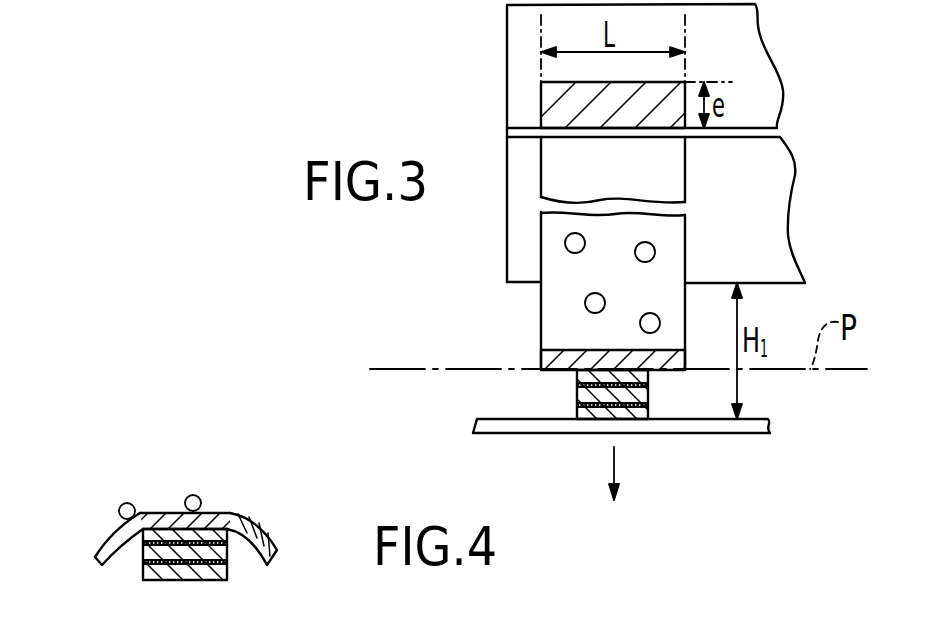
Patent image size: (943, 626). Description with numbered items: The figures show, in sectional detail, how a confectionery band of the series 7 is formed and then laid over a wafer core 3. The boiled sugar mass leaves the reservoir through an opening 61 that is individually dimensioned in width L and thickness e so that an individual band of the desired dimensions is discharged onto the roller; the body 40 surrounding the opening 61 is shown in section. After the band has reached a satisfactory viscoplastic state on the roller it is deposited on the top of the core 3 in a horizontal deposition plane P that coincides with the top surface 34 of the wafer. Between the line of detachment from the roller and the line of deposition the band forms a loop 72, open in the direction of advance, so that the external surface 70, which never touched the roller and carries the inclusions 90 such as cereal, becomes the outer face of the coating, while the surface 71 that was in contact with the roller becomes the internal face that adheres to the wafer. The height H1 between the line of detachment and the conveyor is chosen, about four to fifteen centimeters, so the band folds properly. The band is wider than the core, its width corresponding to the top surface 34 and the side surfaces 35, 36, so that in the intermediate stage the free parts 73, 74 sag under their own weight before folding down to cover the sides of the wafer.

In FIG. 3, the core 3 is at (570, 373).
In FIG. 3, the series of confectionery bands 7 is at (524, 255).
In FIG. 4, the top surface 34 is at (212, 528).
In FIG. 3, the side surface 35 is at (590, 395).
In FIG. 4, the side surface 35 is at (140, 550).
In FIG. 3, the side surface 36 is at (650, 383).
In FIG. 4, the side surface 36 is at (227, 558).
In FIG. 3, the support body 40 is at (773, 178).
In FIG. 3, the opening 61 is at (568, 76).
In FIG. 3, the external surface of the band 70 is at (687, 258).
In FIG. 3, the surface of the band in contact with the roller 71 is at (686, 371).
In FIG. 3, the loop 72 is at (533, 288).
In FIG. 4, the free part of the band 73 is at (107, 537).
In FIG. 4, the free part of the band 74 is at (265, 537).
In FIG. 3, the inclusions 90 is at (640, 250).
In FIG. 4, the inclusions 90 is at (185, 500).